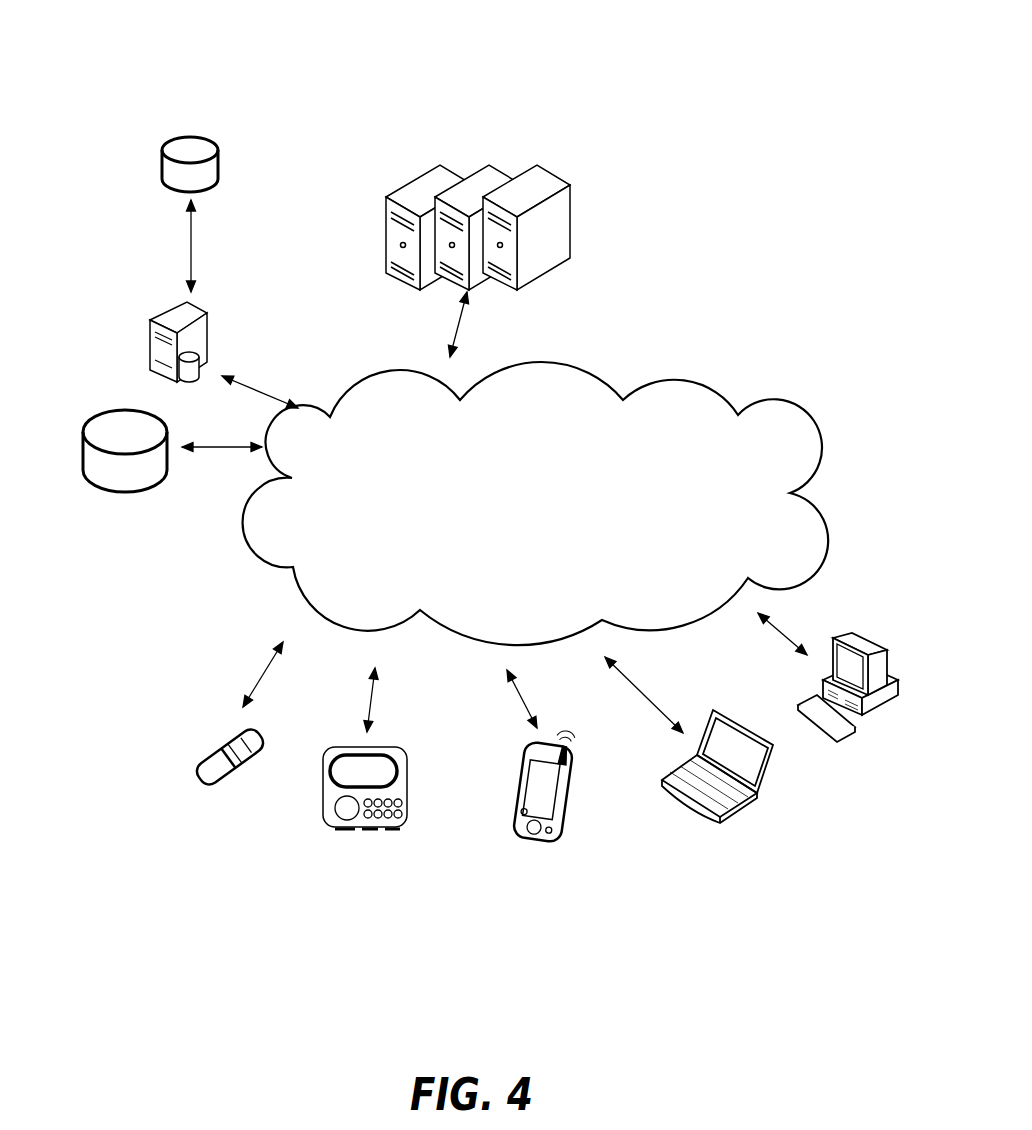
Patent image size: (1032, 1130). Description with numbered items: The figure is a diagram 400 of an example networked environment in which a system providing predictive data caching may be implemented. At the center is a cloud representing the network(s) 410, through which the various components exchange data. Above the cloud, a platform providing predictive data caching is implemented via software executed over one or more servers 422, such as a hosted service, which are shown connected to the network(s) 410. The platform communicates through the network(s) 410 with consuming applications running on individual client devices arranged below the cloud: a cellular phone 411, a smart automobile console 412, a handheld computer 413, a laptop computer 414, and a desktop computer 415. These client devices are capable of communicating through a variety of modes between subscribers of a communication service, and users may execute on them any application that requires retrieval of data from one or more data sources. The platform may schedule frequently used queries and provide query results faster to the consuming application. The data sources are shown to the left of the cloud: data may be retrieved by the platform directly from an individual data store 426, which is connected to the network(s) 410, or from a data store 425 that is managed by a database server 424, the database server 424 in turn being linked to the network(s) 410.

The diagram of an example networked environment 400 is at (720, 50).
The network(s) 410 is at (397, 358).
The cellular phone 411 is at (203, 810).
The smart automobile console 412 is at (365, 850).
The handheld computer 413 is at (553, 857).
The laptop computer 414 is at (742, 830).
The desktop computer 415 is at (887, 732).
The servers 422 is at (398, 165).
The database server 424 is at (180, 291).
The data store 425 is at (185, 128).
The data store 426 is at (137, 400).